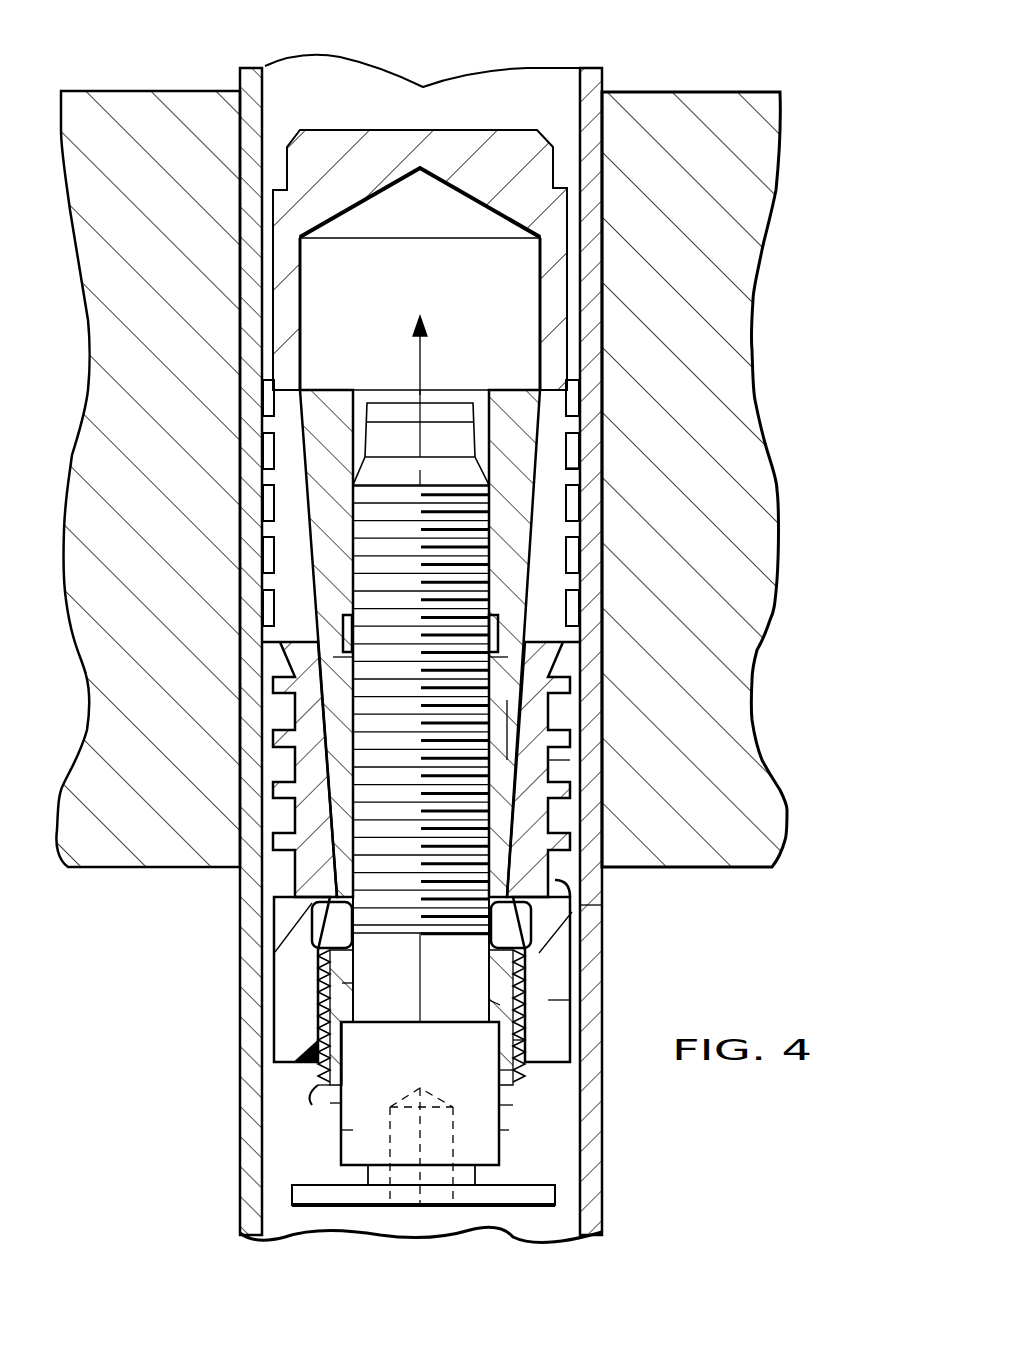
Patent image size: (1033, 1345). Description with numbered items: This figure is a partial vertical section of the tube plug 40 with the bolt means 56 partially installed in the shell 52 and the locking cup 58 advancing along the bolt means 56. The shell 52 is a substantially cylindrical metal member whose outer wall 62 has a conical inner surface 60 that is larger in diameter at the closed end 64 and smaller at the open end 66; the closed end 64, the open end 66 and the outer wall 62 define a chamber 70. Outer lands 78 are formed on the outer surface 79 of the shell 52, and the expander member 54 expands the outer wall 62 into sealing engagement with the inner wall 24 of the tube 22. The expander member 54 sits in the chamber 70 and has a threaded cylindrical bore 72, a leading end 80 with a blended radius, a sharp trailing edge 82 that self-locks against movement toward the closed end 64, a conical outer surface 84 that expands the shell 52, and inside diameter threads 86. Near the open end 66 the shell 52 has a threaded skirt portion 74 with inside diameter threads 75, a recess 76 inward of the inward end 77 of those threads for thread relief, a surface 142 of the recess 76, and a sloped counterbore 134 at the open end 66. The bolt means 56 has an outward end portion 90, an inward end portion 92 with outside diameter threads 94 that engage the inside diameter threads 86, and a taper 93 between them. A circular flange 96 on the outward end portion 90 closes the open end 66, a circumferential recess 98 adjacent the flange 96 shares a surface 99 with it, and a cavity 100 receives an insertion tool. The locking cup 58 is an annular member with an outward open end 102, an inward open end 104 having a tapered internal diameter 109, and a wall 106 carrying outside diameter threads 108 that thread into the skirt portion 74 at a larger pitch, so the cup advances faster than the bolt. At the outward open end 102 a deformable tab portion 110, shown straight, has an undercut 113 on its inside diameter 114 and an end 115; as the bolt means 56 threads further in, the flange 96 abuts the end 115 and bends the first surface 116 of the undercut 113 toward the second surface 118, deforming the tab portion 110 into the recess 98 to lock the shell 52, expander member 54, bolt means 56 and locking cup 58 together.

The tube 22 is at (603, 1175).
The inner wall 24 is at (578, 1195).
The tube plug 40 is at (176, 967).
The shell 52 is at (406, 122).
The expander member 54 is at (505, 410).
The bolt means 56 is at (340, 697).
The locking cup 58 is at (545, 1105).
The conical inner surface 60 is at (303, 308).
The outer wall 62 is at (292, 247).
The closed end 64 is at (317, 160).
The open end 66 is at (290, 1056).
The chamber 70 is at (505, 716).
The threaded cylindrical bore 72 is at (452, 395).
The threaded cylindrical skirt portion 74 is at (580, 910).
The inside diameter threads 75 is at (566, 1012).
The recess 76 is at (490, 933).
The inward end 77 is at (332, 925).
The outer lands 78 is at (572, 422).
The outer surface 79 is at (578, 472).
The leading end 80 is at (340, 622).
The trailing edge 82 is at (327, 407).
The conical outer surface 84 is at (306, 505).
The inside diameter threads 86 is at (492, 533).
The outward end portion 90 is at (525, 1035).
The inward end portion 92 is at (388, 540).
The taper 93 is at (492, 1006).
The outside diameter threads 94 is at (590, 768).
The flange 96 is at (562, 1232).
The circumferential recess 98 is at (478, 1182).
The surface 99 is at (508, 1184).
The cavity 100 is at (432, 1073).
The outward open end 102 is at (335, 1130).
The inward open end 104 is at (326, 968).
The wall 106 is at (525, 1015).
The outside diameter threads 108 is at (512, 1070).
The tapered internal diameter 109 is at (352, 983).
The deformable tab portion 110 is at (337, 1103).
The undercut 113 is at (364, 1132).
The inside diameter 114 is at (384, 1117).
The end 115 is at (320, 1175).
The first surface 116 is at (483, 1132).
The second surface 118 is at (497, 1107).
The sloped counterbore 134 is at (318, 1117).
The surface 142 is at (515, 905).